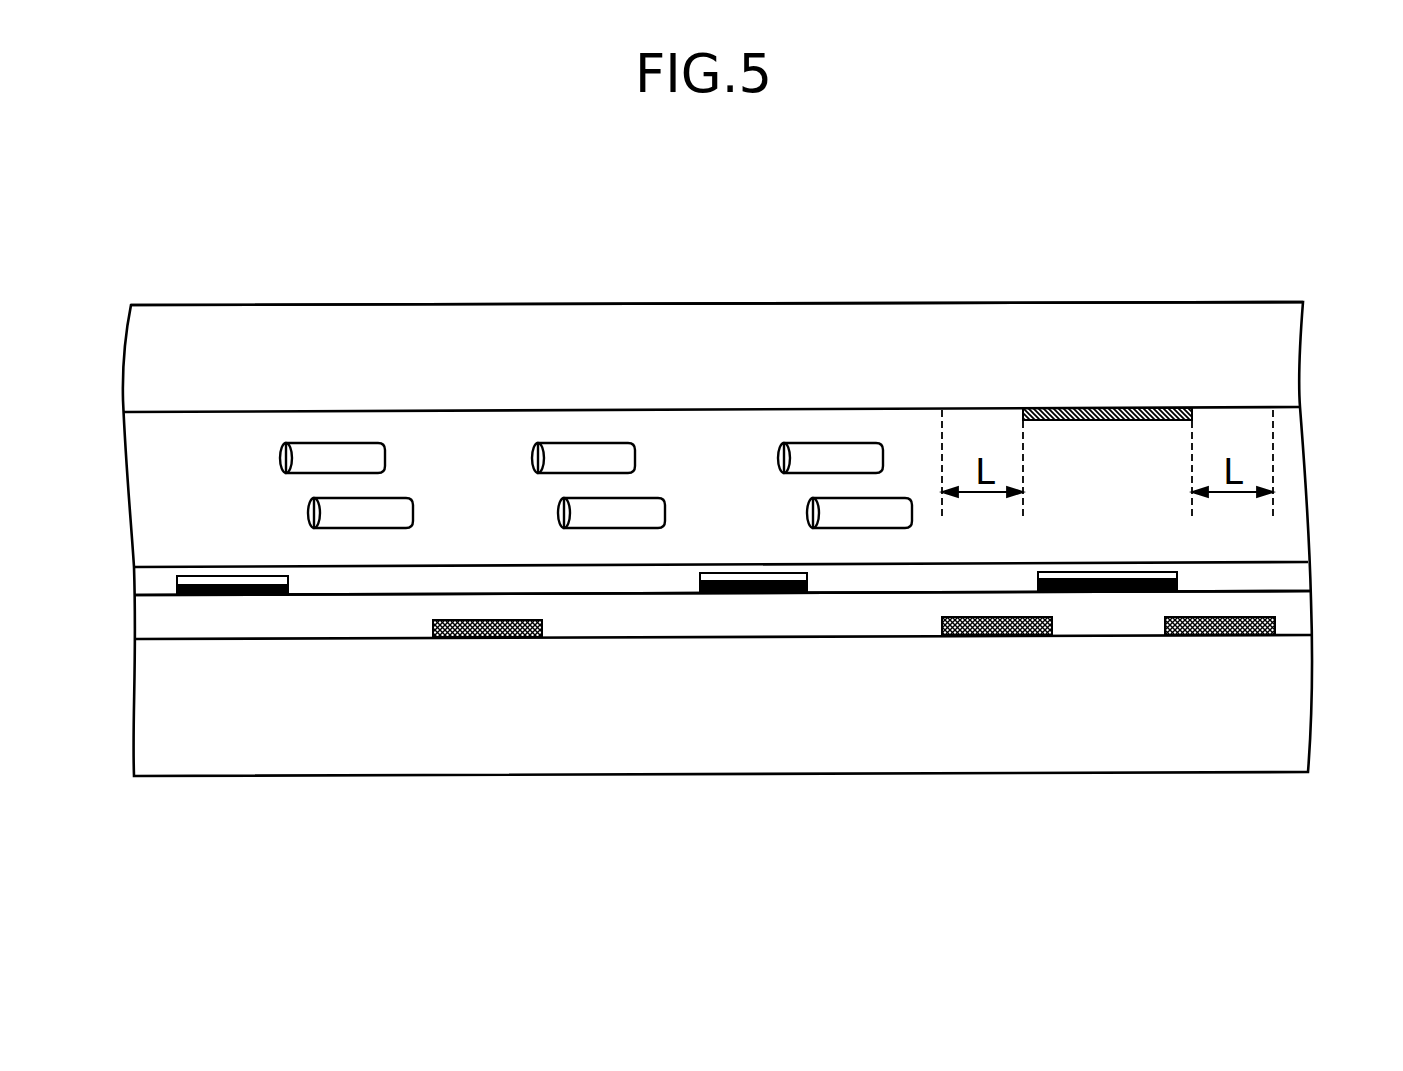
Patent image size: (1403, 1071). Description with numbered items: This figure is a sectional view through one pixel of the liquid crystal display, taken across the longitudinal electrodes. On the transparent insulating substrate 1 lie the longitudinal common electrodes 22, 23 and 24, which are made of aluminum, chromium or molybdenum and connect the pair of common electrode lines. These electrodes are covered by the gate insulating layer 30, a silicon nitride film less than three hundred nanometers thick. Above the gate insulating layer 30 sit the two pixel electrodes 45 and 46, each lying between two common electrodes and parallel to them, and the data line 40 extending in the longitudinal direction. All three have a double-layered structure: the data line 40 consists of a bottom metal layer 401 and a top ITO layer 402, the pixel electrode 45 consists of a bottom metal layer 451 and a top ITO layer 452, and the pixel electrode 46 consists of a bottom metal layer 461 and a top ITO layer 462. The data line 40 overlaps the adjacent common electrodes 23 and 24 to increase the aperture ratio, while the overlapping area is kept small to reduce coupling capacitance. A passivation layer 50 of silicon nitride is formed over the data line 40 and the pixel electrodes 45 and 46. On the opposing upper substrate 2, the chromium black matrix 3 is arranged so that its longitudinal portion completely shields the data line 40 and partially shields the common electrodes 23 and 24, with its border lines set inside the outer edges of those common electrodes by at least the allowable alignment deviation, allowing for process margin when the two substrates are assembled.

The transparent insulating substrate 1 is at (1280, 735).
The upper substrate 2 is at (947, 342).
The black matrix pattern 3 is at (1135, 407).
The common electrode 22 is at (485, 643).
The common electrode 23 is at (962, 637).
The common electrode 24 is at (1222, 637).
The gate insulating layer 30 is at (1297, 620).
The data line 40 is at (1107, 742).
The bottom metal layer 401 is at (1073, 591).
The top ITO layer 402 is at (1137, 573).
The pixel electrode 45 is at (236, 746).
The bottom metal layer 451 is at (203, 597).
The top ITO layer 452 is at (270, 578).
The pixel electrode 46 is at (761, 739).
The bottom metal layer 461 is at (727, 595).
The top ITO layer 462 is at (790, 575).
The passivation layer 50 is at (872, 580).